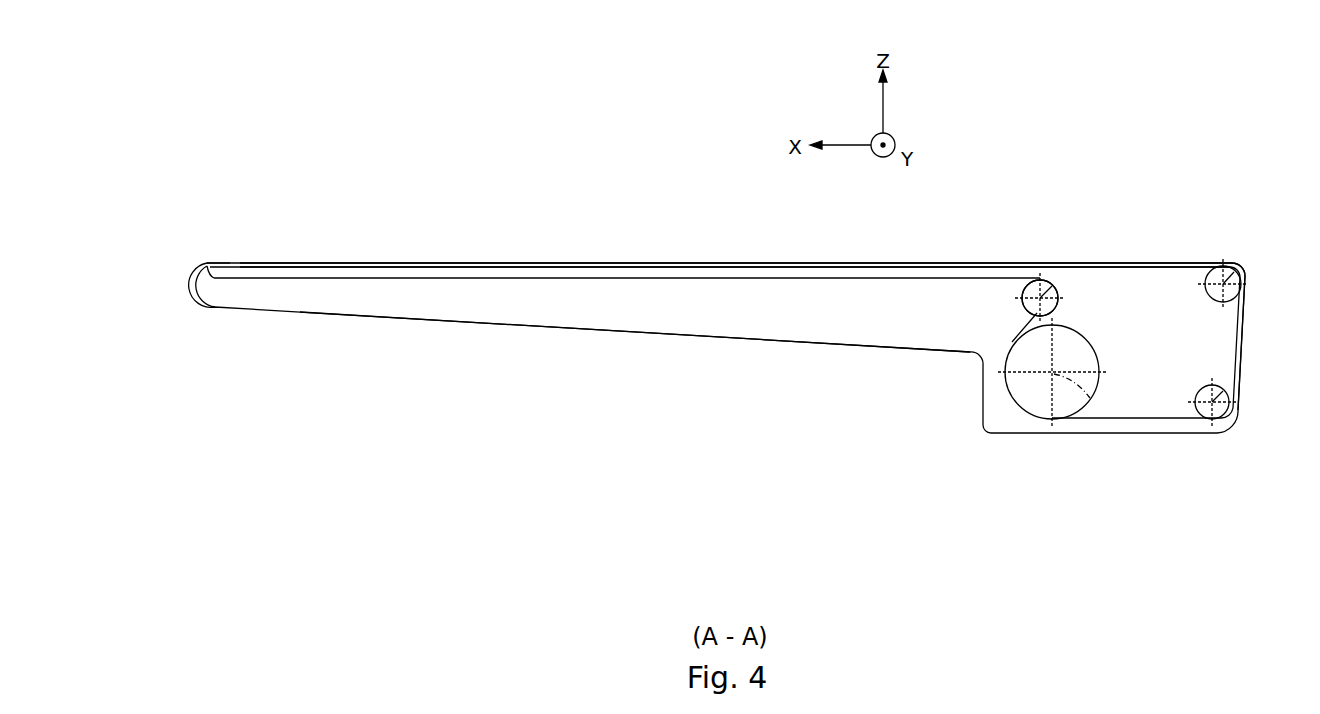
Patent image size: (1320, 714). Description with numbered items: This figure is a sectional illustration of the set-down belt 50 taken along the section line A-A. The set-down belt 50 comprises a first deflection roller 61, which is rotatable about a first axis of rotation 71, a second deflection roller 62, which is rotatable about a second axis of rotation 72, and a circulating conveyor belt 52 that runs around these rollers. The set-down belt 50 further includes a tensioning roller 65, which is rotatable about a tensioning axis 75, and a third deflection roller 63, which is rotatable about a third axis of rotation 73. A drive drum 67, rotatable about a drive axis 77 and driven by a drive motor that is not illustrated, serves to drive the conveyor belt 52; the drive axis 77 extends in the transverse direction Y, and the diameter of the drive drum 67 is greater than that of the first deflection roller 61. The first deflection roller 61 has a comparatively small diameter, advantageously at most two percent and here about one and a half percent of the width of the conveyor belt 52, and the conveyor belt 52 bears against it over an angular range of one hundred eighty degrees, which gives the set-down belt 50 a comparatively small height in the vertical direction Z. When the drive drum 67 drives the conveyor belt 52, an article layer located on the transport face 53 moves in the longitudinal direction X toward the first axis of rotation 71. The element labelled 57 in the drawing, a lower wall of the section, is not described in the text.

The set-down belt 50 is at (1190, 158).
The conveyor belt 52 is at (650, 262).
The transport face 53 is at (517, 262).
The lower wall 57 is at (615, 322).
The first deflection roller 61 is at (215, 306).
The second deflection roller 62 is at (1205, 292).
The third deflection roller 63 is at (1199, 390).
The tensioning roller 65 is at (1022, 310).
The drive drum 67 is at (1085, 340).
The first axis of rotation 71 is at (202, 258).
The second axis of rotation 72 is at (1244, 263).
The third axis of rotation 73 is at (1240, 390).
The tensioning axis 75 is at (1052, 263).
The drive axis 77 is at (1094, 400).